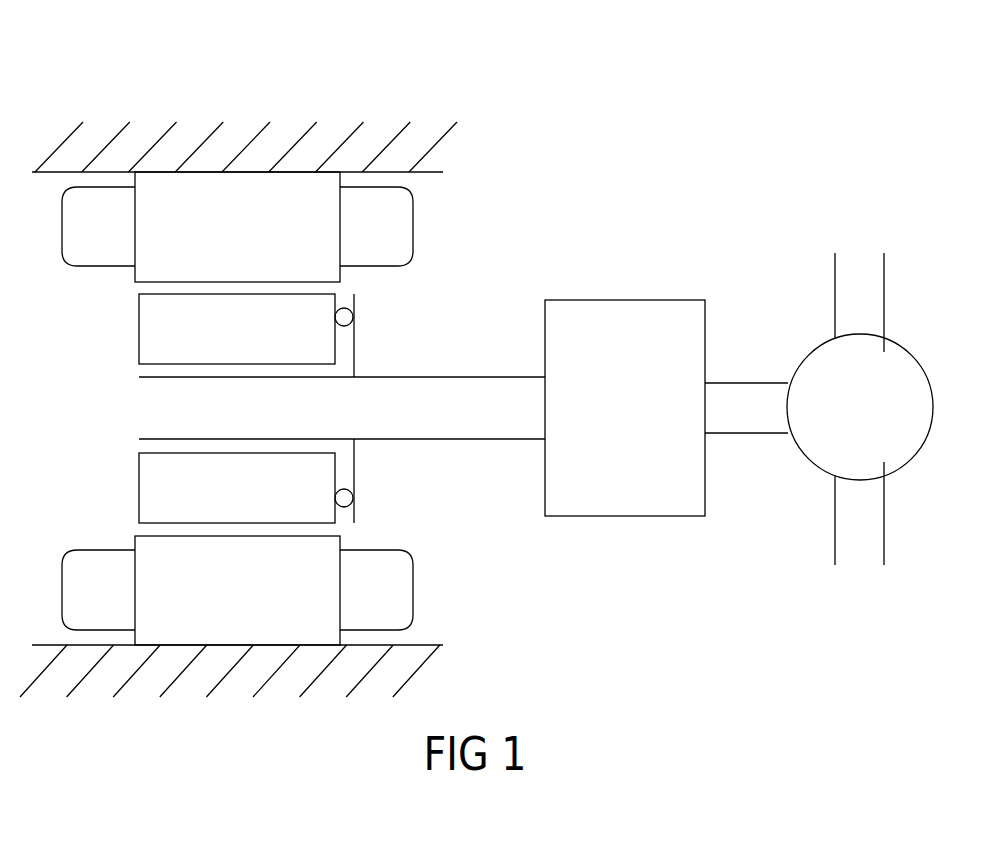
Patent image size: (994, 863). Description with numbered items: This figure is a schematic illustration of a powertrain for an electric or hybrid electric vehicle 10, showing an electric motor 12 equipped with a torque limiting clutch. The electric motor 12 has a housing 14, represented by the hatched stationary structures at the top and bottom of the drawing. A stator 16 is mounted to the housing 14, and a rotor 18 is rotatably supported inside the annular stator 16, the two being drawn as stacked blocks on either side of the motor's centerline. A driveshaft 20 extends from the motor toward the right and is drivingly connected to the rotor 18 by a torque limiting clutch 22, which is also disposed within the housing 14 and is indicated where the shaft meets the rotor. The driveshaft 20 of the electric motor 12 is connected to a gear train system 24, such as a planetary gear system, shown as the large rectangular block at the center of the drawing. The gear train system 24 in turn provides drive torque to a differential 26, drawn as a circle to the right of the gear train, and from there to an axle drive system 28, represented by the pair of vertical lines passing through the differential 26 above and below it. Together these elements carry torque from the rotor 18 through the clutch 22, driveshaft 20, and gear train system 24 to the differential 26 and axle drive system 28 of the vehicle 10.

The electric or hybrid electric vehicle 10 is at (604, 117).
The electric motor 12 is at (424, 79).
The housing 14 is at (262, 130).
The stator 16 is at (251, 236).
The rotor 18 is at (252, 501).
The driveshaft 20 is at (425, 440).
The torque limiting clutch 22 is at (383, 311).
The gear train system 24 is at (641, 421).
The differential 26 is at (873, 423).
The axle drive system 28 is at (852, 298).